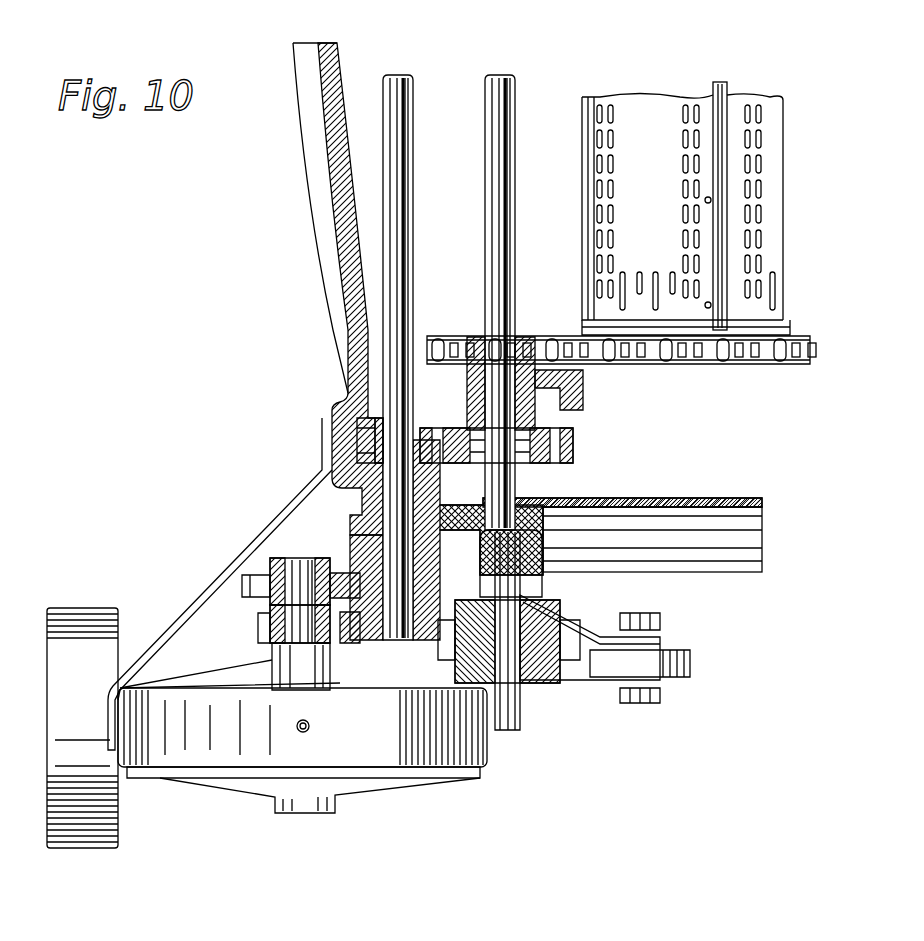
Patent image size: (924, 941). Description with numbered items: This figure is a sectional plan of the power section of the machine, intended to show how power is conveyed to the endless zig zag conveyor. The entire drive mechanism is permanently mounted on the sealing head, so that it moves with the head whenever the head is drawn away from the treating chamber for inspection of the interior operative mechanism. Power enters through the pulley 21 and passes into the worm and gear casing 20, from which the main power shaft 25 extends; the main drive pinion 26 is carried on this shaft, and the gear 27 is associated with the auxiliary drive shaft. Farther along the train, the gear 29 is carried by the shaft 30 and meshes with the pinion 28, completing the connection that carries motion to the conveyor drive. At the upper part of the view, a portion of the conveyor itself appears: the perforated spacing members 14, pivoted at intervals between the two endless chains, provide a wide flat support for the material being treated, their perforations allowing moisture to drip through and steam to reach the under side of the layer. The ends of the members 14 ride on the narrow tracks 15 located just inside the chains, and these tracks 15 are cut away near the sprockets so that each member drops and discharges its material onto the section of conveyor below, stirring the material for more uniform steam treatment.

The spacing members 14 is at (765, 222).
The tracks 15 is at (795, 328).
The worm and gear casing 20 is at (425, 735).
The pulley 21 is at (118, 832).
The main power shaft 25 is at (300, 632).
The main drive pinion 26 is at (262, 575).
The gear 27 is at (490, 572).
The pinion 28 is at (365, 446).
The gear 29 is at (573, 460).
The shaft 30 is at (512, 142).